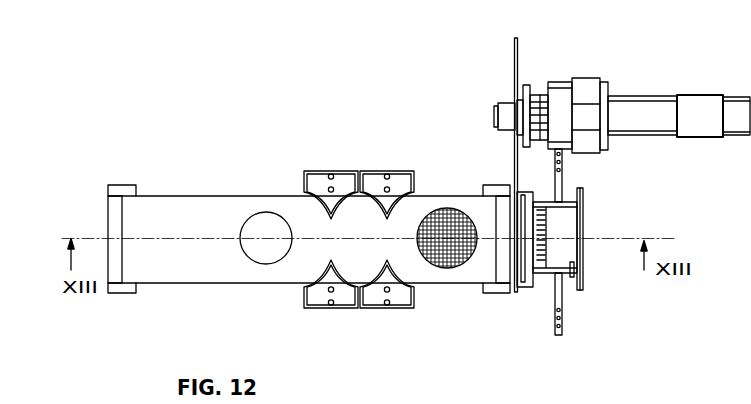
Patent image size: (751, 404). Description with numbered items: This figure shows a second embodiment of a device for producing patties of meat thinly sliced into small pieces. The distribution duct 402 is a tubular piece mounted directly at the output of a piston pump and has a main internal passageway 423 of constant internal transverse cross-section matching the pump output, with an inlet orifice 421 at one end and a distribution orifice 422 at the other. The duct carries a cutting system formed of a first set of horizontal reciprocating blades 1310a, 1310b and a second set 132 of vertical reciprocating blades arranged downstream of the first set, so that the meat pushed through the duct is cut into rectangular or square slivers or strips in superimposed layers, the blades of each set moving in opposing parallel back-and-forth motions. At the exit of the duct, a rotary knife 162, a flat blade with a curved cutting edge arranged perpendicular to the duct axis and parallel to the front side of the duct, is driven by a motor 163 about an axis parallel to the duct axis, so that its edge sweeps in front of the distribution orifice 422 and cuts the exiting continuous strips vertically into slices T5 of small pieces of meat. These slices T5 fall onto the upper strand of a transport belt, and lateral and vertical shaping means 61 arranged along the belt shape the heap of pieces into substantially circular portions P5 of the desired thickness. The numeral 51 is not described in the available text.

The cylindrical drum 51 is at (166, 283).
The substantially circular portion P5 is at (257, 214).
The slice T5 is at (438, 210).
The lateral and vertical shaping means 61 is at (316, 171).
The rotary knife 162 is at (514, 58).
The motor 163 is at (643, 97).
The horizontal reciprocating blade 1310a is at (562, 173).
The horizontal reciprocating blade 1310b is at (563, 318).
The distribution duct 402 is at (555, 261).
The inlet orifice 421 is at (583, 248).
The distribution orifice 422 is at (517, 268).
The second set of vertical reciprocating blades 132 is at (540, 275).
The main internal passageway 423 is at (572, 277).